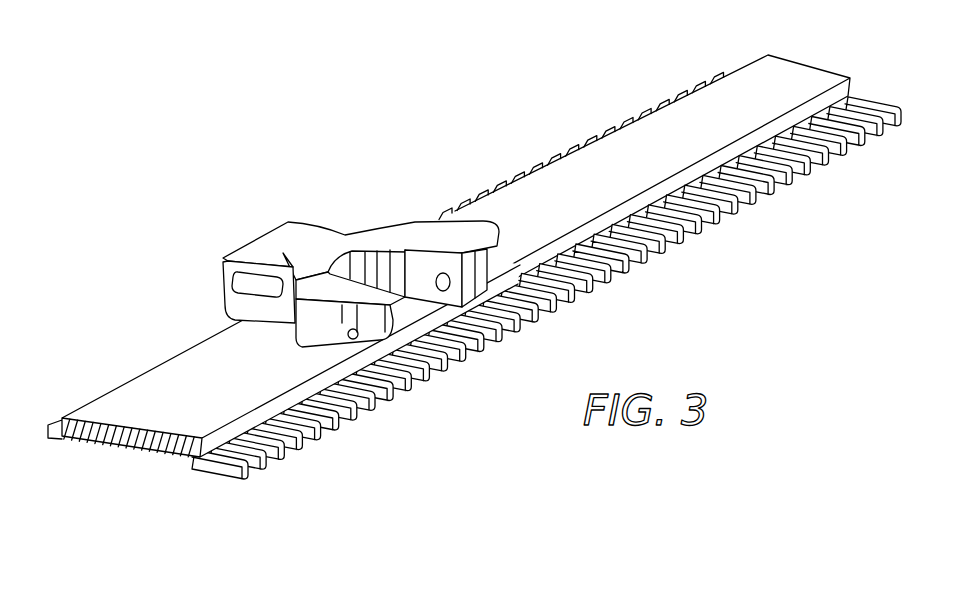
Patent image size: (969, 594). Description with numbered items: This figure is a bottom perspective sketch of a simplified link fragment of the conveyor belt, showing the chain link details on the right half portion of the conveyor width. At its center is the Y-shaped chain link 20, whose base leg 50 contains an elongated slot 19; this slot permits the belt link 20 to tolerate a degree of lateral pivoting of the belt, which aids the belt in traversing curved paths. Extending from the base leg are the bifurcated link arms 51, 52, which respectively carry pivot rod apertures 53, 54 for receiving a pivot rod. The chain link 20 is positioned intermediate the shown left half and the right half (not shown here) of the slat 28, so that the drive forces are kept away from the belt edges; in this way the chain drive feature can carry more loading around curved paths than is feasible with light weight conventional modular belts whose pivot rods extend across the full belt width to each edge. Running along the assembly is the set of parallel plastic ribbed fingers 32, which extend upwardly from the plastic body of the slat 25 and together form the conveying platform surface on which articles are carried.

The parallel plastic ribbed fingers 32 is at (546, 287).
The slat 28 is at (205, 478).
The slat 25 is at (100, 412).
The Y-shaped chain link 20 is at (321, 297).
The base leg 50 is at (211, 219).
The elongated slot 19 is at (263, 287).
The bifurcated link arm 52 is at (301, 389).
The pivot rod aperture 54 is at (352, 333).
The bifurcated link arm 51 is at (483, 290).
The pivot rod aperture 53 is at (437, 278).